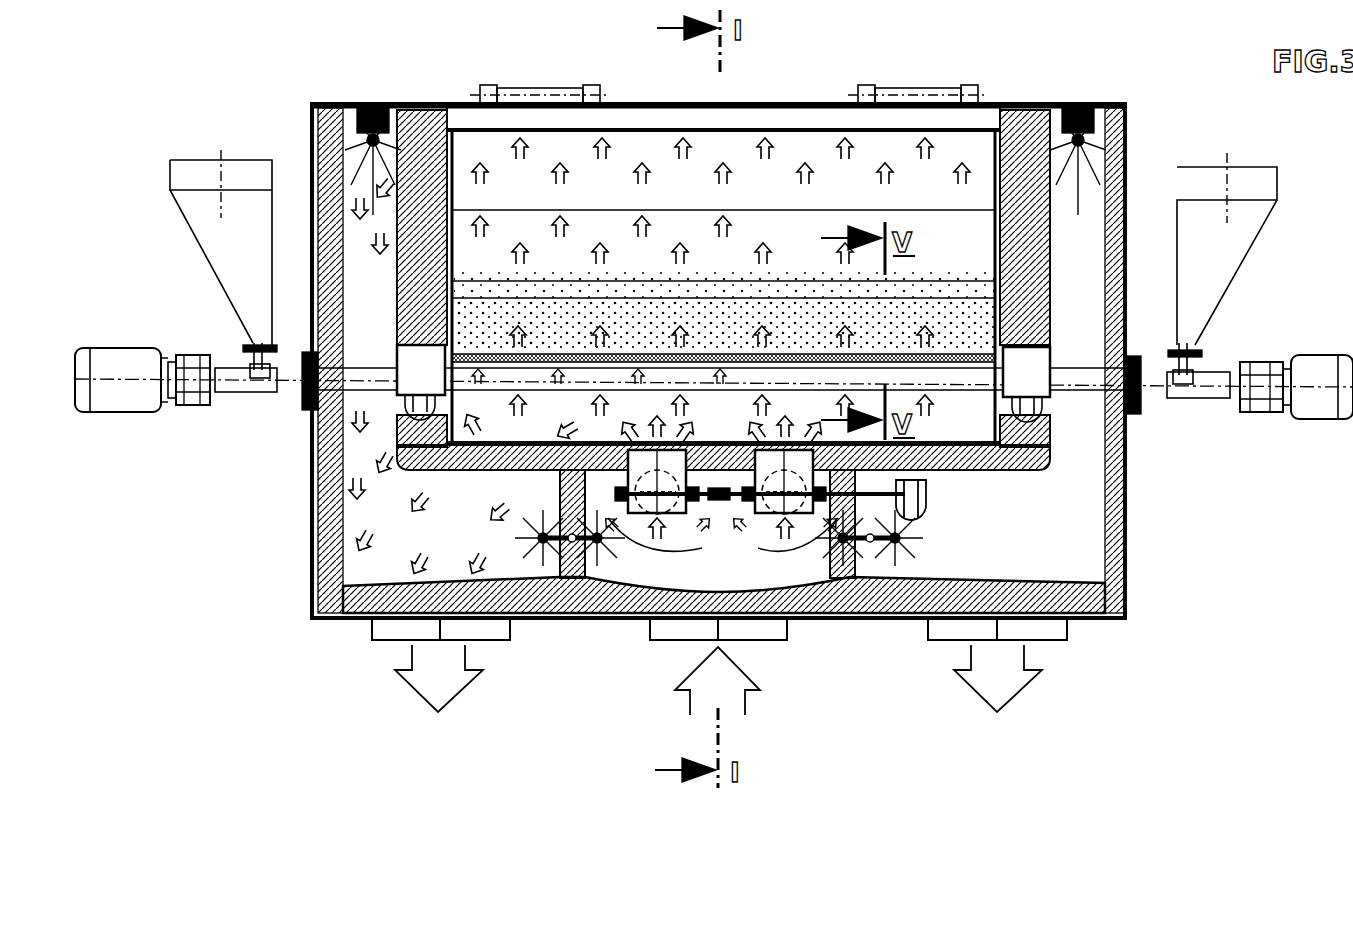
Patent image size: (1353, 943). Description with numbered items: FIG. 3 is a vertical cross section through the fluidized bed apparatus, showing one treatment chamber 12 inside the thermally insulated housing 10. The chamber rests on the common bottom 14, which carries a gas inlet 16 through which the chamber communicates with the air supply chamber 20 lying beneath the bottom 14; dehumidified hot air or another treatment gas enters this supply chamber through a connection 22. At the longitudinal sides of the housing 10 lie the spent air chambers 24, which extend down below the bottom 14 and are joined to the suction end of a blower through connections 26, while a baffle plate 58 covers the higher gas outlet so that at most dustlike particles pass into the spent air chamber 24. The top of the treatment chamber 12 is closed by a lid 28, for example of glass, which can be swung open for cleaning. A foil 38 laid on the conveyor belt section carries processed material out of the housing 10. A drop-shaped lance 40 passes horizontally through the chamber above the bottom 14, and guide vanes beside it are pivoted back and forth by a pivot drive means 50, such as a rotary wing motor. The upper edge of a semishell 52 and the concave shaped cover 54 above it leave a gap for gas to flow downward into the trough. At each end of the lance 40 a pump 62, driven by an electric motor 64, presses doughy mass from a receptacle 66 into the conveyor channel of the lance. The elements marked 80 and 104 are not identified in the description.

The housing 10 is at (306, 531).
The treatment chamber 12 is at (772, 260).
The bottom 14 is at (485, 465).
The gas inlet 16 is at (700, 548).
The air supply chamber 20 is at (782, 582).
The connection 22 is at (662, 645).
The spent air chamber 24 is at (1037, 529).
The connection 26 is at (385, 645).
The lid 28 is at (782, 112).
The foil 38 is at (985, 446).
The lance 40 is at (742, 382).
The pivot drive means 50 is at (1045, 410).
The semishell 52 is at (545, 300).
The shaped cover 54 is at (643, 292).
The baffle plate 58 is at (958, 205).
The pump 62 is at (240, 396).
The electric motor 64 is at (125, 412).
The receptacle 66 is at (215, 248).
The agitator shaft 80 is at (540, 362).
The spray nozzle 104 is at (345, 135).